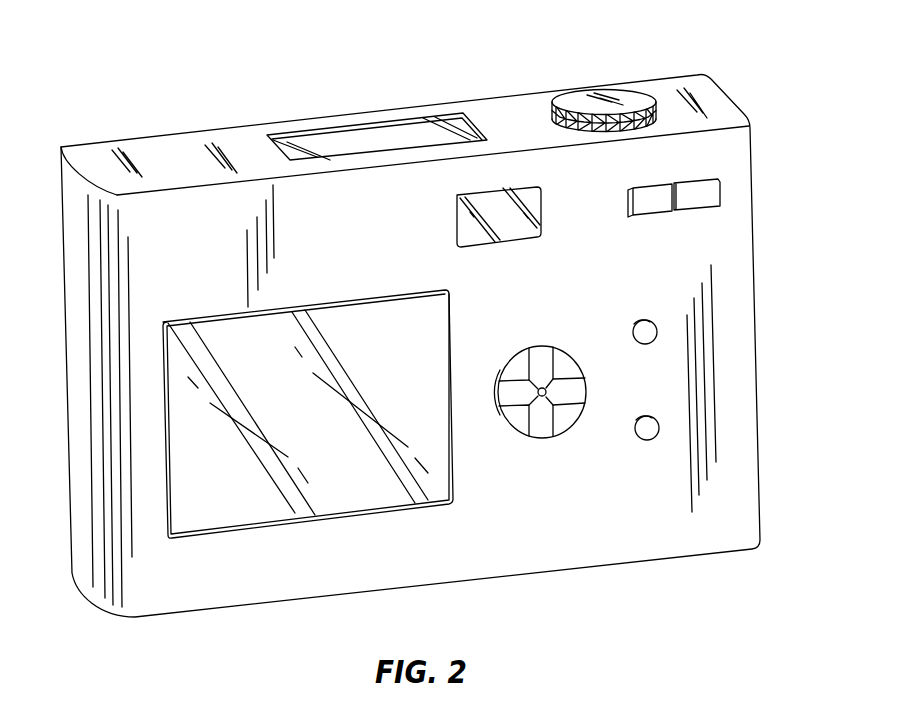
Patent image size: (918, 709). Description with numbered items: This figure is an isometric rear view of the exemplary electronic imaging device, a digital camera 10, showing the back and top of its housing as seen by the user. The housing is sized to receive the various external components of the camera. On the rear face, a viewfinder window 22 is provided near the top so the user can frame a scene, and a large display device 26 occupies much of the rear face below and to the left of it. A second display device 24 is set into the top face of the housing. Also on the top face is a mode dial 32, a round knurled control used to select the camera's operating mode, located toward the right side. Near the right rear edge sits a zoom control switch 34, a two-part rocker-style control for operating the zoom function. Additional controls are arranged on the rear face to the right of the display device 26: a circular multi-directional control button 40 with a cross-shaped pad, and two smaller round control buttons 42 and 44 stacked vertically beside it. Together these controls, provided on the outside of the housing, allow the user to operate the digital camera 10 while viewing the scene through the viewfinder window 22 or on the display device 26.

The digital camera 10 is at (187, 90).
The viewfinder window 22 is at (508, 247).
The display device 24 is at (357, 127).
The display device 26 is at (362, 298).
The mode dial 32 is at (586, 89).
The zoom control switch 34 is at (707, 170).
The control button 40 is at (543, 438).
The control button 42 is at (642, 344).
The control button 44 is at (645, 440).